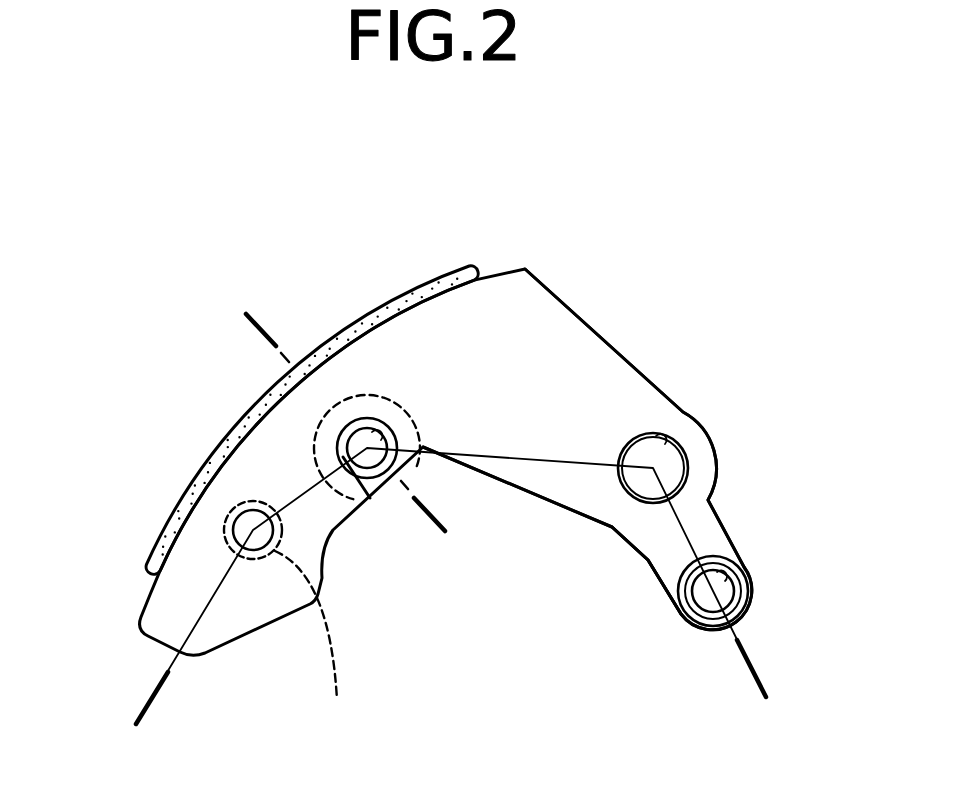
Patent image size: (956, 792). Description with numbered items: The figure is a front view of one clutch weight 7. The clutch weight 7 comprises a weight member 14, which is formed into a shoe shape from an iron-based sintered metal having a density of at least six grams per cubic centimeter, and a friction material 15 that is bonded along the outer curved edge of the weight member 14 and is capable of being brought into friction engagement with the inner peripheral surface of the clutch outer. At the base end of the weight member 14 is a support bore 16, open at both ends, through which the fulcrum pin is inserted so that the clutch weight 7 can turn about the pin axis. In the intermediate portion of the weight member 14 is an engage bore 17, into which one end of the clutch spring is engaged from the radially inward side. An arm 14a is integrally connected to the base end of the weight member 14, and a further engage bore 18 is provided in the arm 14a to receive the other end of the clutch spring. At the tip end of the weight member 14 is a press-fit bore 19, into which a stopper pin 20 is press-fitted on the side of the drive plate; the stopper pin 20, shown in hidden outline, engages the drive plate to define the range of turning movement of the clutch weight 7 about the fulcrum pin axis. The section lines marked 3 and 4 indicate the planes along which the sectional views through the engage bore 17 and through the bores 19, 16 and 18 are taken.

The clutch weight 7 is at (527, 246).
The weight member 14 is at (630, 387).
The arm 14a is at (665, 573).
The friction material 15 is at (438, 278).
The support bore 16 is at (657, 437).
The engage bore 17 is at (388, 428).
The engage bore 18 is at (720, 567).
The press-fit bore 19 is at (253, 511).
The stopper pin 20 is at (317, 659).
The section line 3- 3 is at (429, 531).
The section line 4- 4 is at (769, 669).